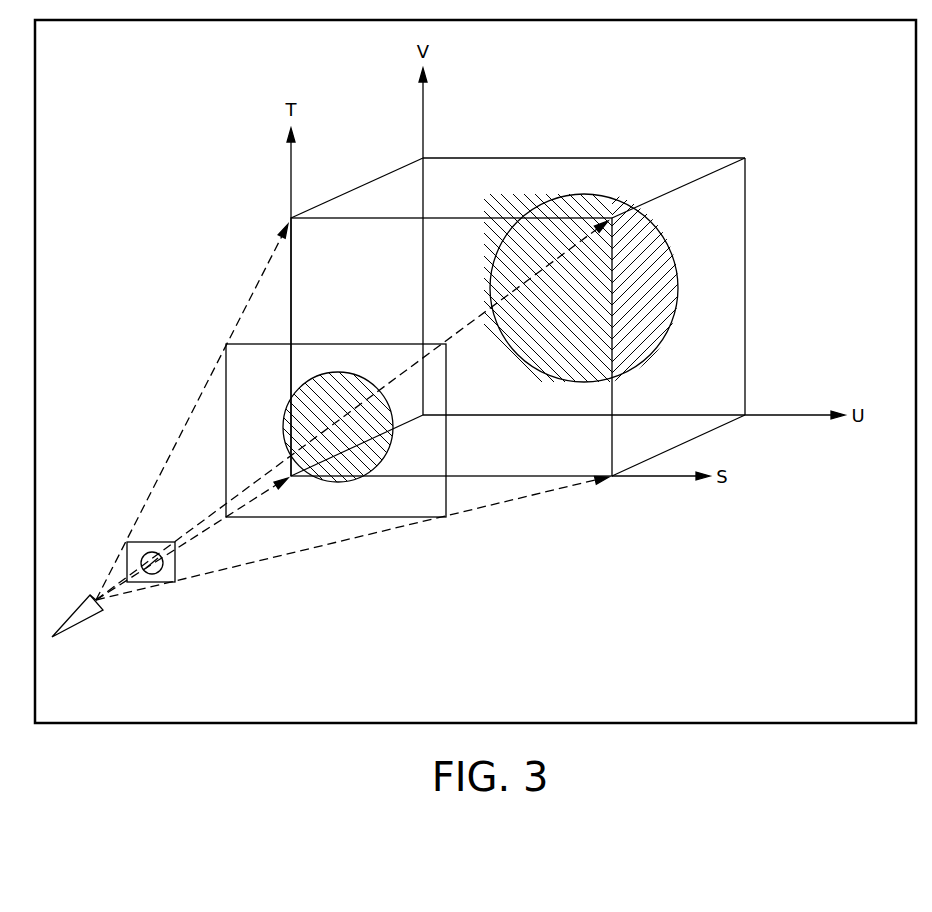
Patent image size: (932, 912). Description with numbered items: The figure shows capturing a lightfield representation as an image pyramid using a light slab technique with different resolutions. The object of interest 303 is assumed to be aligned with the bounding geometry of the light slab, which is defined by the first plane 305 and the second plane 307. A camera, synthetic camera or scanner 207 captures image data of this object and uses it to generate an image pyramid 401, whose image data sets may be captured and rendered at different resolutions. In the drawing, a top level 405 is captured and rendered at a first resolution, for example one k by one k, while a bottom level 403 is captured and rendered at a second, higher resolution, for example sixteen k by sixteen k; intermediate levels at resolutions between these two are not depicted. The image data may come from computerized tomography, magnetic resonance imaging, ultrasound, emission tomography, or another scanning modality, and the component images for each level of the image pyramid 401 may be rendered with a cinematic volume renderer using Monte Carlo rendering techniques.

The camera, synthetic camera or scanner 207 is at (86, 636).
The object of interest 303 is at (692, 292).
The first plane 305 is at (432, 216).
The second plane 307 is at (518, 279).
The image pyramid 401 is at (222, 333).
The bottom level 403 is at (461, 435).
The top level 405 is at (151, 600).